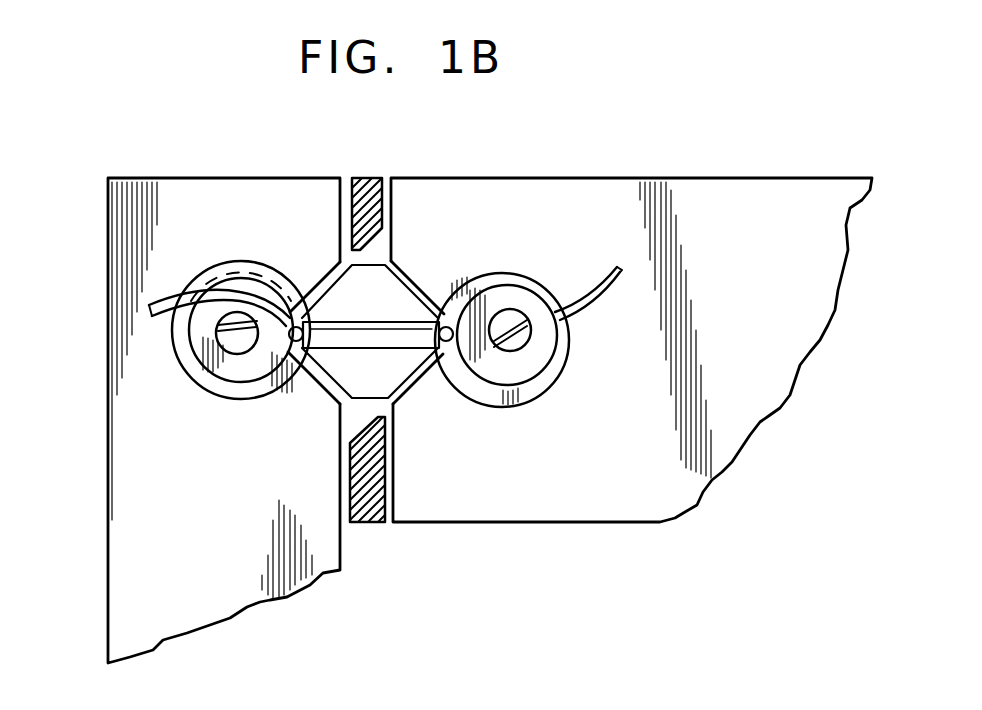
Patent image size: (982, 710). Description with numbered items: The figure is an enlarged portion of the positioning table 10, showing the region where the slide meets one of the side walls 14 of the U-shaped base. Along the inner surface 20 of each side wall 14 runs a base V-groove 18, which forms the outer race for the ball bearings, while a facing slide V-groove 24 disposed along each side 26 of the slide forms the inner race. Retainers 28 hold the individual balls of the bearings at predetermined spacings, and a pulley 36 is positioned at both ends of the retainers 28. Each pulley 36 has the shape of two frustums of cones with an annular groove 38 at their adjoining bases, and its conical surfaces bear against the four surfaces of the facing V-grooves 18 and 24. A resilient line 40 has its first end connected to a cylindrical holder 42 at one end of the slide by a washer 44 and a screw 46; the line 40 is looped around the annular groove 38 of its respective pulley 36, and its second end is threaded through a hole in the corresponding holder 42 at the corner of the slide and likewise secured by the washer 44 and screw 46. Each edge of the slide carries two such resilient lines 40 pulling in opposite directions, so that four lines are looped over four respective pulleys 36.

The positioning table 10 is at (608, 158).
The side wall 14 is at (108, 535).
The base V-groove 18 is at (325, 290).
The inner surface 20 is at (343, 182).
The slide V-groove 24 is at (417, 283).
The side of slide 26 is at (390, 178).
The retainer 28 is at (367, 177).
The pulley 36 is at (330, 397).
The annular groove 38 is at (390, 340).
The resilient line 40 is at (152, 305).
The cylindrical holder 42 is at (238, 400).
The washer 44 is at (207, 370).
The screw 46 is at (217, 340).